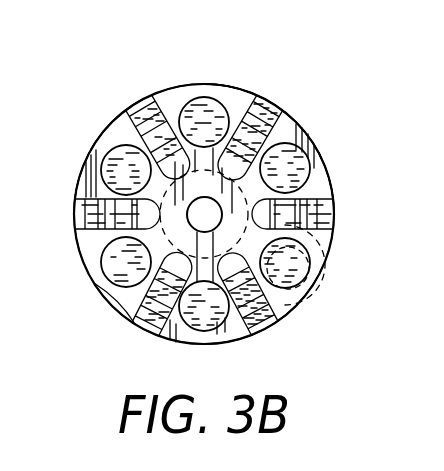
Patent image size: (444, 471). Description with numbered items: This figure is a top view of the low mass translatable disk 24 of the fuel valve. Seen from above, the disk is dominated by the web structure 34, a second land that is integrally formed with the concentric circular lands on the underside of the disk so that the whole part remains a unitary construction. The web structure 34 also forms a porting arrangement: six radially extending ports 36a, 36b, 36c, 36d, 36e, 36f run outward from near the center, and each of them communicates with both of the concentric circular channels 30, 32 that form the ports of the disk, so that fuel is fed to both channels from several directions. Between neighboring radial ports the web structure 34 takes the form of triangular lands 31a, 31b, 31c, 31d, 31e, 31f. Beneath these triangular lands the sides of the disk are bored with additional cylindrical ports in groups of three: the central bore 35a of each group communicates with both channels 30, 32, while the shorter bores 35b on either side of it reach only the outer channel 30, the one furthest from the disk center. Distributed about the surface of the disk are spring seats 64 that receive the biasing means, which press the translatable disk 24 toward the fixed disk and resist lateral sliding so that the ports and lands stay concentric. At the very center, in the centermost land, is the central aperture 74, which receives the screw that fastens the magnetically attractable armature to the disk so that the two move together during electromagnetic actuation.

The translatable disk 24 is at (114, 108).
The concentric circular channel 30 is at (173, 88).
The triangular land 31a is at (248, 90).
The triangular land 31b is at (333, 190).
The triangular land 31c is at (311, 300).
The triangular land 31d is at (234, 331).
The triangular land 31e is at (116, 304).
The triangular land 31f is at (83, 180).
The concentric circular channel 32 is at (115, 138).
The web structure 34 is at (307, 118).
The central bore 35a is at (327, 287).
The side bore 35b is at (337, 248).
The radially extending port 36a is at (141, 104).
The radially extending port 36b is at (270, 101).
The radially extending port 36c is at (335, 218).
The radially extending port 36d is at (270, 320).
The radially extending port 36e is at (150, 318).
The radially extending port 36f is at (78, 213).
The spring seat 64 is at (208, 102).
The central aperture 74 is at (198, 212).